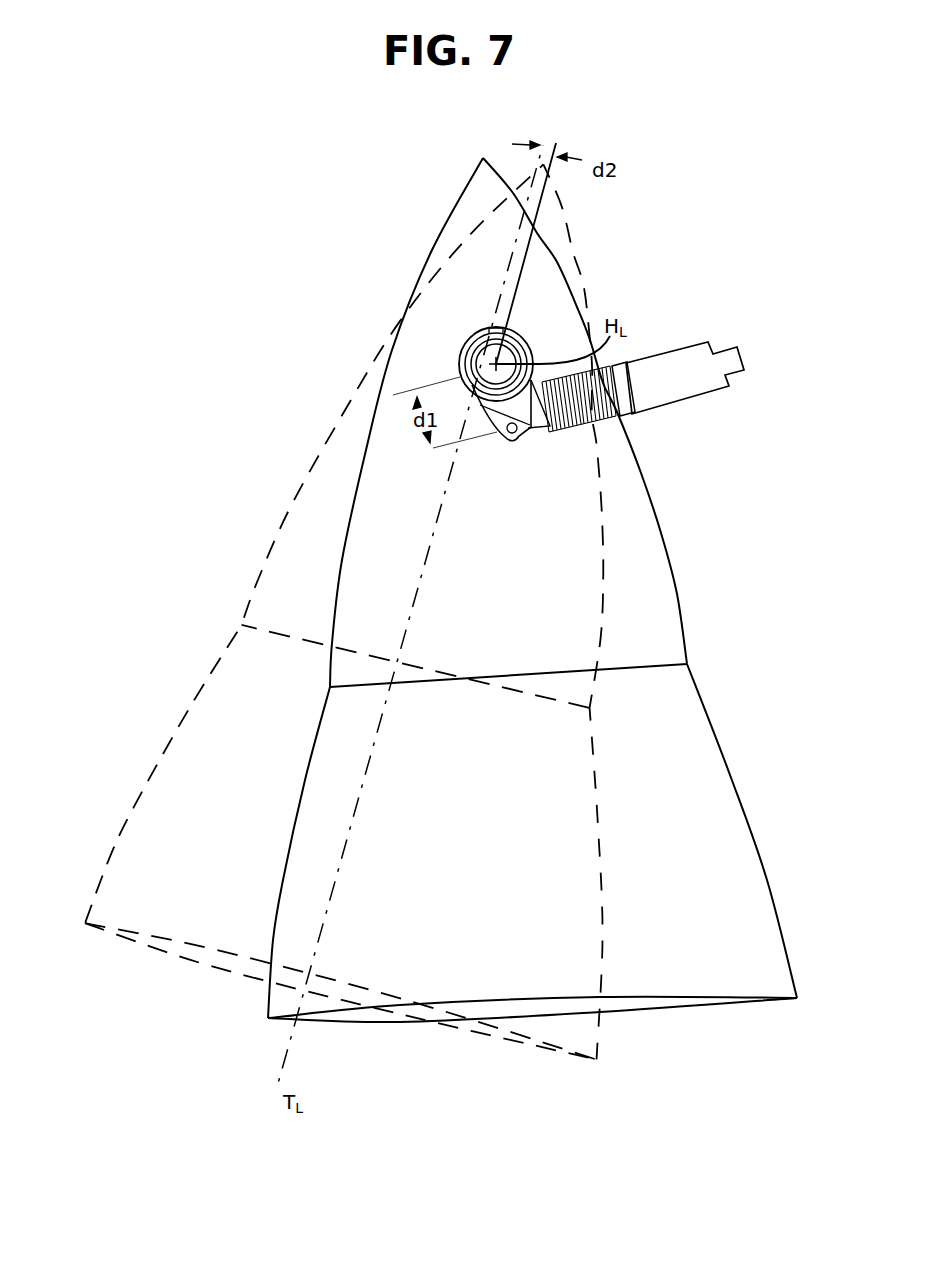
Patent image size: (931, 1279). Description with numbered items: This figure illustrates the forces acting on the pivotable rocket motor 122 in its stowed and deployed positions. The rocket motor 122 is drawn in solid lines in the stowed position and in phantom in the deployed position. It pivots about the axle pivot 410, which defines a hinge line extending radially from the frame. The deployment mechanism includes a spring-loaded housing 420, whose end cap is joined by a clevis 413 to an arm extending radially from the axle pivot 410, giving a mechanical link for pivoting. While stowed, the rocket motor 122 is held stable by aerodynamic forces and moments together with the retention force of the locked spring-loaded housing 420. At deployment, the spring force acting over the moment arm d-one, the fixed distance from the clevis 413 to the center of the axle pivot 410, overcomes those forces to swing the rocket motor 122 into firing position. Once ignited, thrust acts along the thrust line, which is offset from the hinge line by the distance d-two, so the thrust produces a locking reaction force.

The rocket motor 122 is at (168, 749).
The axle pivot 410 is at (516, 342).
The clevis 413 is at (515, 442).
The spring-loaded housing 420 is at (700, 391).